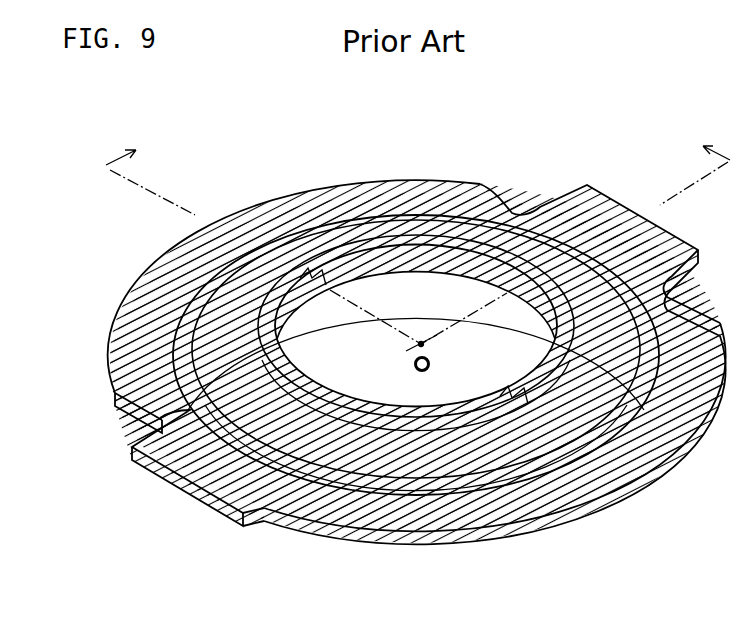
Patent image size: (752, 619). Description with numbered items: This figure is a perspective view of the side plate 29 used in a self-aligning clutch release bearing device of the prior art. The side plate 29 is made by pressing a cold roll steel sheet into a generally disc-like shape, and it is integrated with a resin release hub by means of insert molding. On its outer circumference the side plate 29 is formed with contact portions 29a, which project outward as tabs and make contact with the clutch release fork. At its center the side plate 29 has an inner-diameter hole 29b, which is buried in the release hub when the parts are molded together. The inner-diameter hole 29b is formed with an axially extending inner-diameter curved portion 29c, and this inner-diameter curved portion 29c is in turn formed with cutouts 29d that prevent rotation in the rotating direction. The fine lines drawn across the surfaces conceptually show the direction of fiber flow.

The side plate 29 is at (376, 178).
The contact portion 29a is at (598, 215).
The inner-diameter hole 29b is at (185, 284).
The inner-diameter curved portion 29c is at (541, 527).
The cutout 29d is at (582, 470).